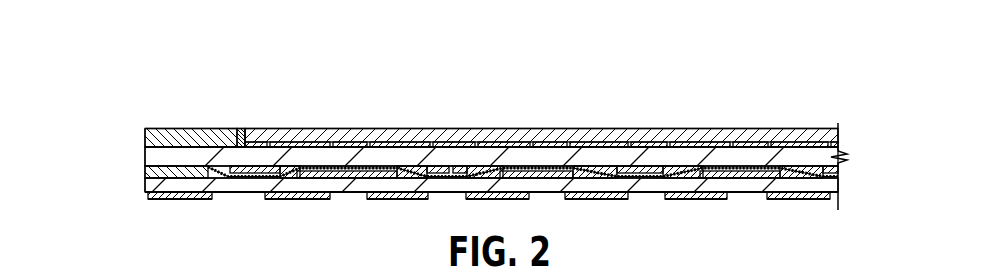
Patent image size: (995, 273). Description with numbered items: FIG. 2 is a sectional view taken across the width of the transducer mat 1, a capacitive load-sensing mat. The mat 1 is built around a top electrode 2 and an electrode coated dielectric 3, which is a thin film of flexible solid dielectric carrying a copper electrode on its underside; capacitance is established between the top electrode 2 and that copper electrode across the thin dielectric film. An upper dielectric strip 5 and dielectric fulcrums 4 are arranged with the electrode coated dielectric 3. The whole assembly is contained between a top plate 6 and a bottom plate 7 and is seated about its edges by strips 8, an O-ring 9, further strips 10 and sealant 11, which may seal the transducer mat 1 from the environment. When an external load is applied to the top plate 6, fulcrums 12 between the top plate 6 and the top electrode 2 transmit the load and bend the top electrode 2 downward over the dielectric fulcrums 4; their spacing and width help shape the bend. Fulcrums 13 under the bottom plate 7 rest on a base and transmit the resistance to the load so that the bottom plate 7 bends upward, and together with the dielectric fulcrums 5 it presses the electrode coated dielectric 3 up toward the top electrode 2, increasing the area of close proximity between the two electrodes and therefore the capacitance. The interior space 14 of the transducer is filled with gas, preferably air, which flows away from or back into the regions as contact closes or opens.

The transducer mat 1 is at (553, 63).
The top electrode 2 is at (397, 160).
The electrode coated dielectric 3 is at (538, 163).
The dielectric fulcrums 4 is at (445, 170).
The dielectric fulcrums 5 is at (550, 178).
The top plate 6 is at (328, 133).
The bottom plate 7 is at (335, 192).
The strips 8 is at (172, 130).
The O-ring 9 is at (207, 168).
The strips 10 is at (145, 173).
The sealant 11 is at (240, 130).
The fulcrums 12 is at (294, 141).
The fulcrums 13 is at (183, 198).
The interior space 14 is at (690, 168).